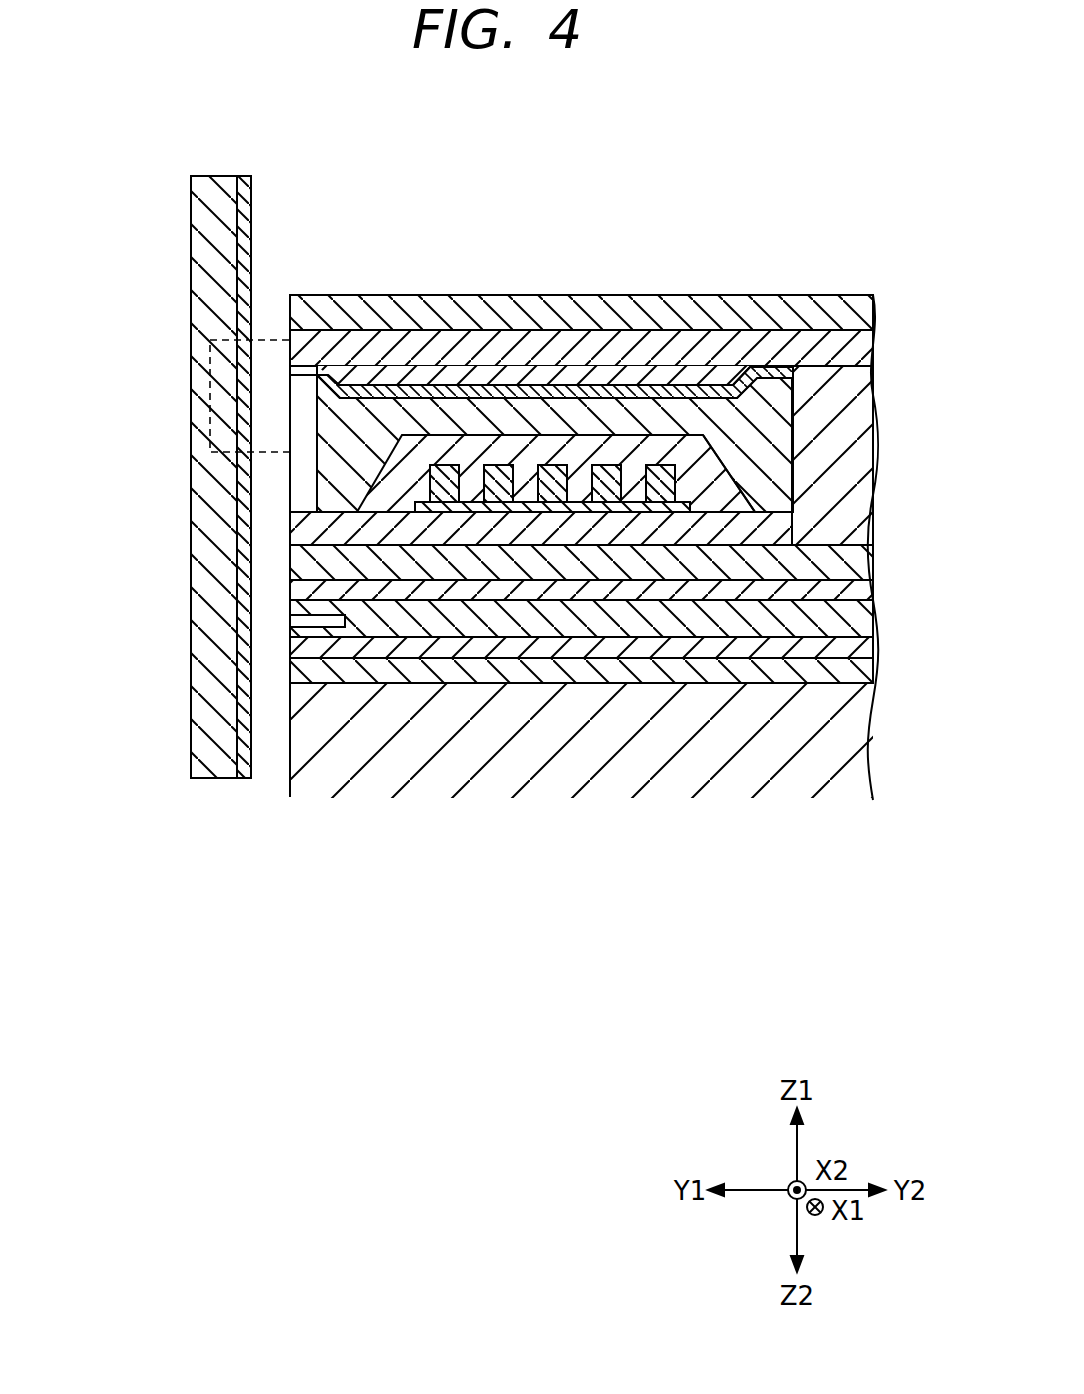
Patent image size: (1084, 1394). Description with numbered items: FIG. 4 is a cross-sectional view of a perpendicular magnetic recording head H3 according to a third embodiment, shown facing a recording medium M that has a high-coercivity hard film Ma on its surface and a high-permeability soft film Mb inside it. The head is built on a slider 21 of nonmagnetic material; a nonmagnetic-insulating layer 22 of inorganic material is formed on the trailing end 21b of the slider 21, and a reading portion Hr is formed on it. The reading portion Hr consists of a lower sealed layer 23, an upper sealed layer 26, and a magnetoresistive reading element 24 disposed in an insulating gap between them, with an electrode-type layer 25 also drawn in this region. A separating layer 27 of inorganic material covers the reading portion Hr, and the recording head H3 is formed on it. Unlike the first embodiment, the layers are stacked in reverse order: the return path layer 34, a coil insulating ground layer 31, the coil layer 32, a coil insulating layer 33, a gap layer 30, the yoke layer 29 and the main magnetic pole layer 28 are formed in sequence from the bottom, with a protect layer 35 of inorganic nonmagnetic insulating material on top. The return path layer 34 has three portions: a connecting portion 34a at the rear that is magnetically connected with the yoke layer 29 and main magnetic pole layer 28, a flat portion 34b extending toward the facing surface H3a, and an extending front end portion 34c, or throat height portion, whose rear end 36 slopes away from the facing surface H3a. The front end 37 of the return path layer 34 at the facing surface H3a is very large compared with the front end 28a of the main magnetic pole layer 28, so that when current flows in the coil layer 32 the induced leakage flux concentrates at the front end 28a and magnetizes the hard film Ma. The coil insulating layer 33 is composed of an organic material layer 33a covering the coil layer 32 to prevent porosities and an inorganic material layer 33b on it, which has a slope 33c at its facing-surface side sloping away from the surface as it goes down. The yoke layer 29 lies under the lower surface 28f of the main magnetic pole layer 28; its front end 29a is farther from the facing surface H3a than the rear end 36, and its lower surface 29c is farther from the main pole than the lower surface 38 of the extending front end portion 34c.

The slider 21 is at (469, 770).
The trailing end of the slider 21b is at (605, 679).
The nonmagnetic-insulating layer 22 is at (313, 675).
The lower sealed layer 23 is at (313, 648).
The reading element 24 is at (313, 620).
The electrode layer 25 is at (392, 623).
The upper sealed layer 26 is at (313, 592).
The separating layer 27 is at (313, 563).
The main magnetic pole layer 28 is at (722, 340).
The front end of the main magnetic pole layer 28a is at (290, 332).
The lower surface of the main magnetic pole layer 28f is at (482, 372).
The yoke layer 29 is at (631, 370).
The front end of the yoke layer 29a is at (368, 360).
The lower surface of the yoke layer 29c is at (538, 390).
The gap layer 30 is at (290, 372).
The coil insulating ground layer 31 is at (447, 507).
The coil layer 32 is at (585, 395).
The coil insulating layer 33 is at (665, 958).
The organic material layer 33a is at (715, 500).
The inorganic material layer 33b is at (775, 483).
The slope 33c is at (437, 421).
The return path layer 34 is at (675, 530).
The connecting portion 34a is at (827, 450).
The flat portion 34b is at (560, 532).
The extending front end portion 34c is at (330, 445).
The protect layer 35 is at (812, 303).
The rear end of the extending front end portion 36 is at (318, 447).
The front end of the return path layer 37 is at (280, 527).
The lower surface of the extending front end portion 38 is at (325, 382).
The perpendicular magnetic recording head H3 is at (888, 292).
The facing surface of the perpendicular magnetic recording head H3a is at (290, 557).
The reading portion Hr is at (888, 543).
The recording medium M is at (260, 783).
The hard film Ma is at (243, 758).
The soft film Mb is at (203, 740).